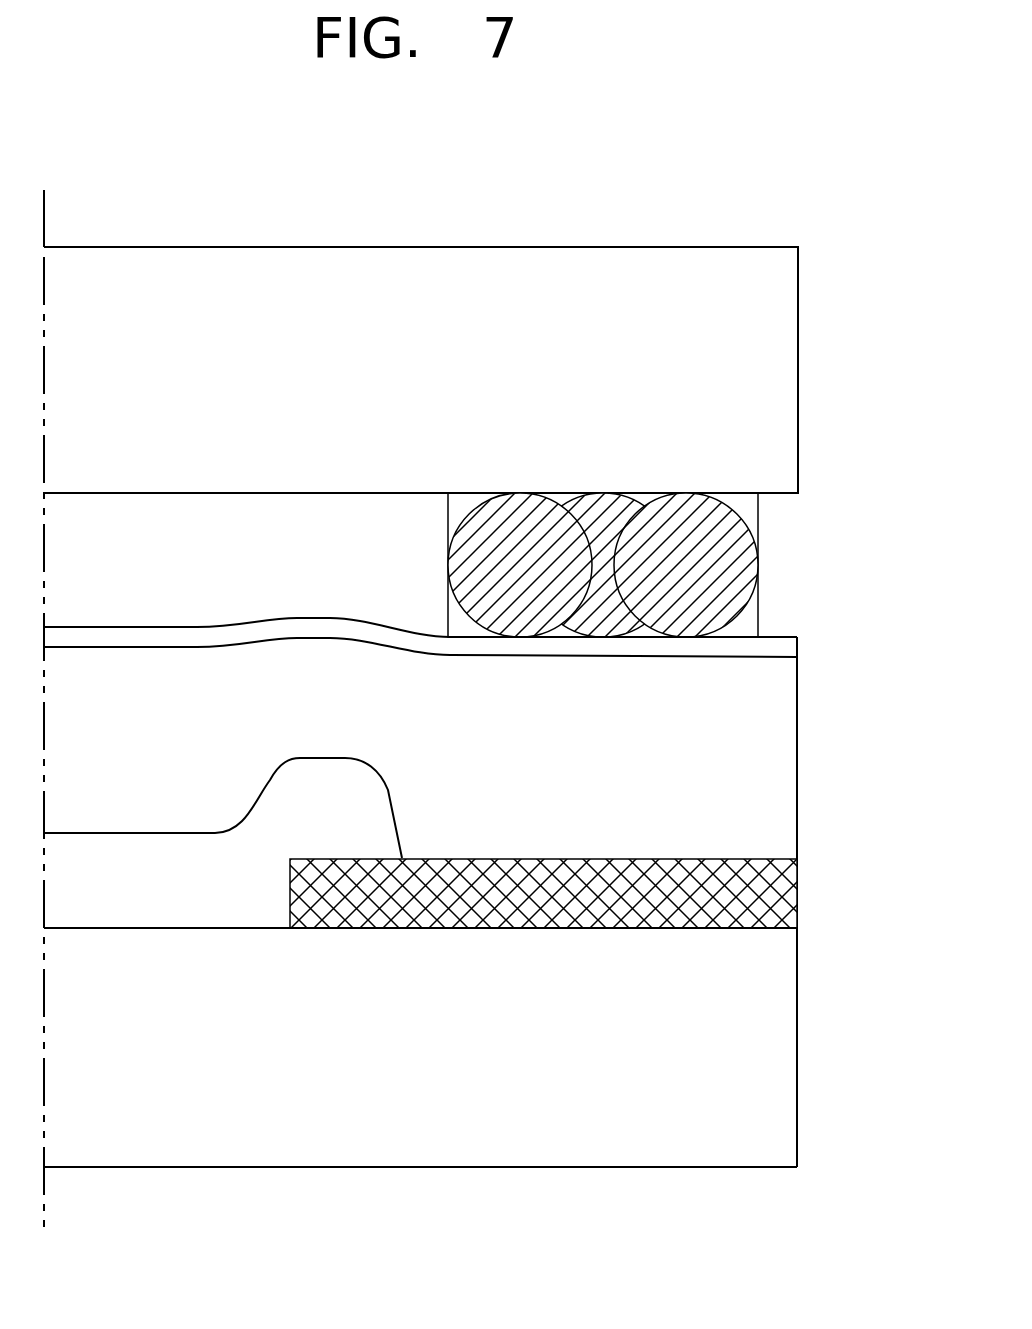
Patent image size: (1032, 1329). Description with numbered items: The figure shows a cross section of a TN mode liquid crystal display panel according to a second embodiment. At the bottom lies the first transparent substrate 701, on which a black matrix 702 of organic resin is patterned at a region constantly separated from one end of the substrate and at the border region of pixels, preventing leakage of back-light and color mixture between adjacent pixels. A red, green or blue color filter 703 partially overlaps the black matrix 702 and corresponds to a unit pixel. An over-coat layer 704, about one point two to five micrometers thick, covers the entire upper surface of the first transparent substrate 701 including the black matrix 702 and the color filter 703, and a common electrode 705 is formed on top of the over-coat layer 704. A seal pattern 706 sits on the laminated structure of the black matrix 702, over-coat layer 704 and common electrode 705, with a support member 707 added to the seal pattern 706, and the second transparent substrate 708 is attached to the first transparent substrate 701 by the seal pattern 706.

The first transparent substrate 701 is at (772, 1098).
The black matrix 702 is at (785, 885).
The color filter 703 is at (143, 883).
The over-coat layer 704 is at (765, 837).
The common electrode 705 is at (772, 647).
The seal pattern 706 is at (733, 628).
The support member 707 is at (758, 552).
The second transparent substrate 708 is at (737, 395).